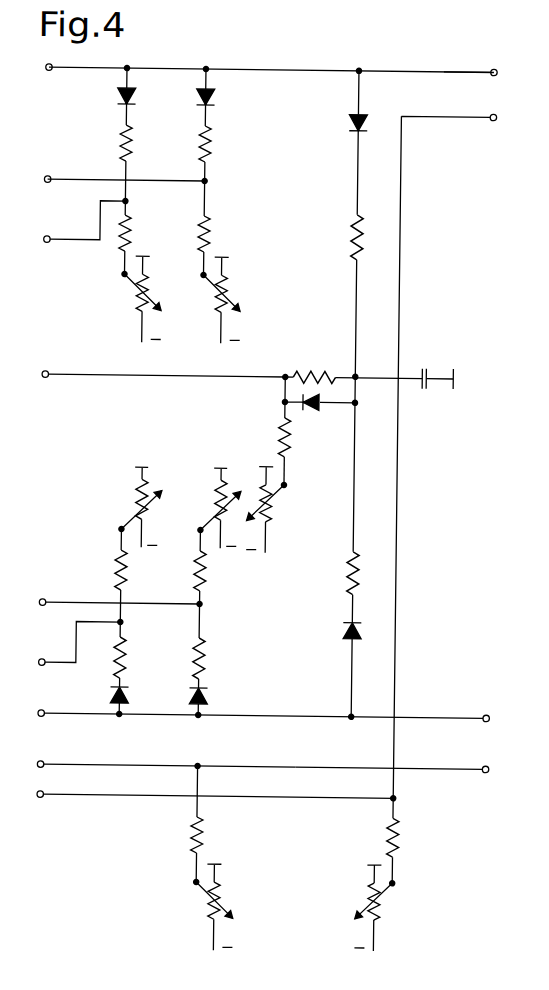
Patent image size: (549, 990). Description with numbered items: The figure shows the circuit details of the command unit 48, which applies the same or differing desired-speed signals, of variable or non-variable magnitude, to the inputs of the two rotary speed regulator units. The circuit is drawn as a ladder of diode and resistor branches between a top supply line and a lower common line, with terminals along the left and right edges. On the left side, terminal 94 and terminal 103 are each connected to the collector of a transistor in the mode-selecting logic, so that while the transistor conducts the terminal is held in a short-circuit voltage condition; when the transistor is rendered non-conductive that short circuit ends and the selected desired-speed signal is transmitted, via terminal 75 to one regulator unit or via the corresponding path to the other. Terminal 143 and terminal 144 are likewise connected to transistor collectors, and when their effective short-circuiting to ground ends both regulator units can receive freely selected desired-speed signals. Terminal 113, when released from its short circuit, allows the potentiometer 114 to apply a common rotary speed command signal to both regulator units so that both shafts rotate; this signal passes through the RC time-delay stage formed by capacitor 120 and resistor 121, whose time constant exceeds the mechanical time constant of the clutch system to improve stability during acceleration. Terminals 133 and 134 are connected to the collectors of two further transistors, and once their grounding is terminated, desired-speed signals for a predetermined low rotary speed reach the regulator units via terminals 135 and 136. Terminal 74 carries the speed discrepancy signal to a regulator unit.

The command unit 48 is at (263, 62).
The terminal 75 is at (488, 67).
The terminal 136 is at (490, 119).
The terminal 94 is at (45, 179).
The terminal 143 is at (45, 246).
The terminal 113 is at (45, 380).
The RC-time-delay stage resistor 121 is at (277, 438).
The RC-time-delay stage capacitor 120 is at (427, 386).
The potentiometer 114 is at (270, 516).
The terminal 103 is at (45, 602).
The terminal 144 is at (45, 662).
The terminal 74 is at (490, 713).
The terminal 133 is at (45, 764).
The terminal 134 is at (45, 800).
The terminal 135 is at (490, 770).